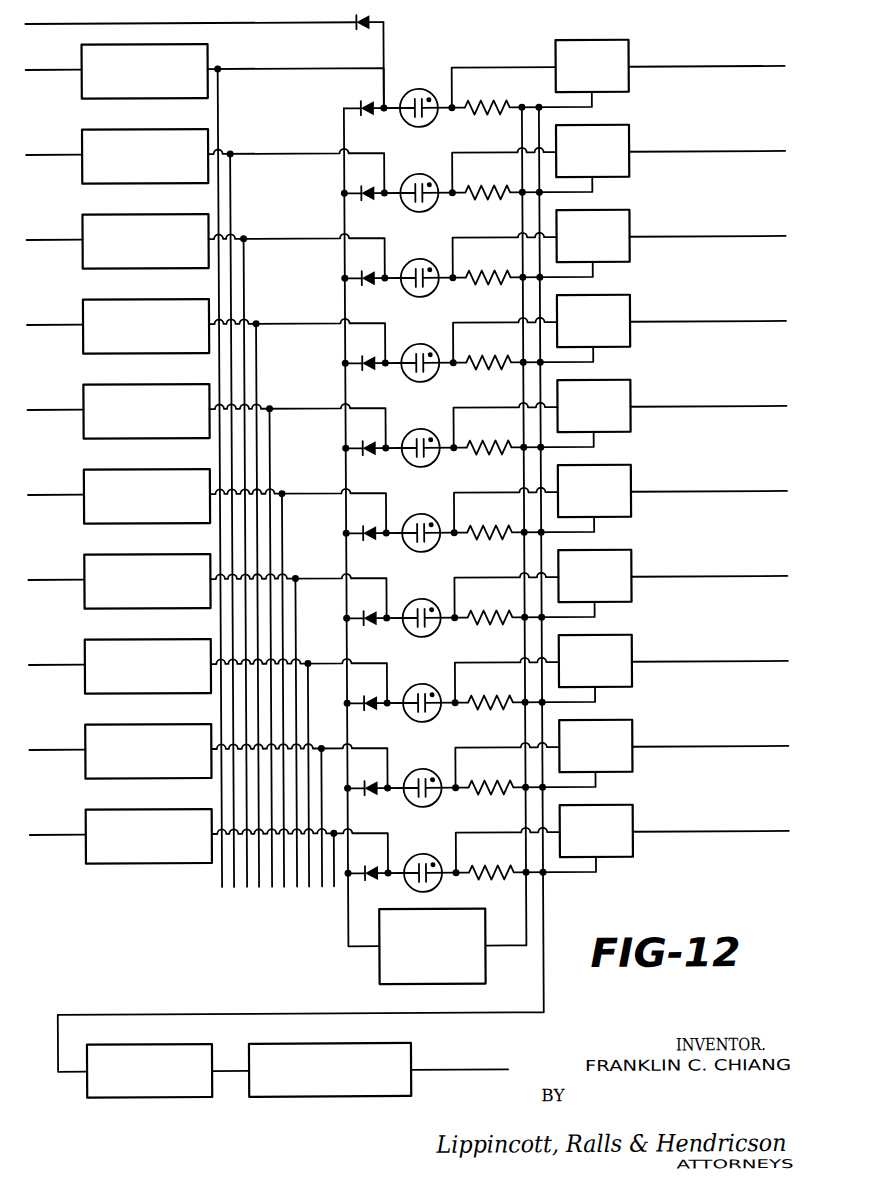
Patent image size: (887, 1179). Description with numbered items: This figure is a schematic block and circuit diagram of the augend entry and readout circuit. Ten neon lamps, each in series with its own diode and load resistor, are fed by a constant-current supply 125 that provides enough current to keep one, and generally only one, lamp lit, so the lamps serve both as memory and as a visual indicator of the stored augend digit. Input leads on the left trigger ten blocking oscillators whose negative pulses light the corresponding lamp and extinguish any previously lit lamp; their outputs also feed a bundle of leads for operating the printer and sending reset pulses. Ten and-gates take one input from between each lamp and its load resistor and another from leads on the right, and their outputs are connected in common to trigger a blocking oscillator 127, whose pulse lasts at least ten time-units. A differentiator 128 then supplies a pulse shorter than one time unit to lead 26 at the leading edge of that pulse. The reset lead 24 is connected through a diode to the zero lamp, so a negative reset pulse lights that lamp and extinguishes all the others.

The reset lead 24 is at (116, 8).
The lead 26 is at (478, 1045).
The constant-current supply 125 is at (400, 985).
The blocking oscillator 127 is at (123, 1096).
The differentiator 128 is at (295, 1096).